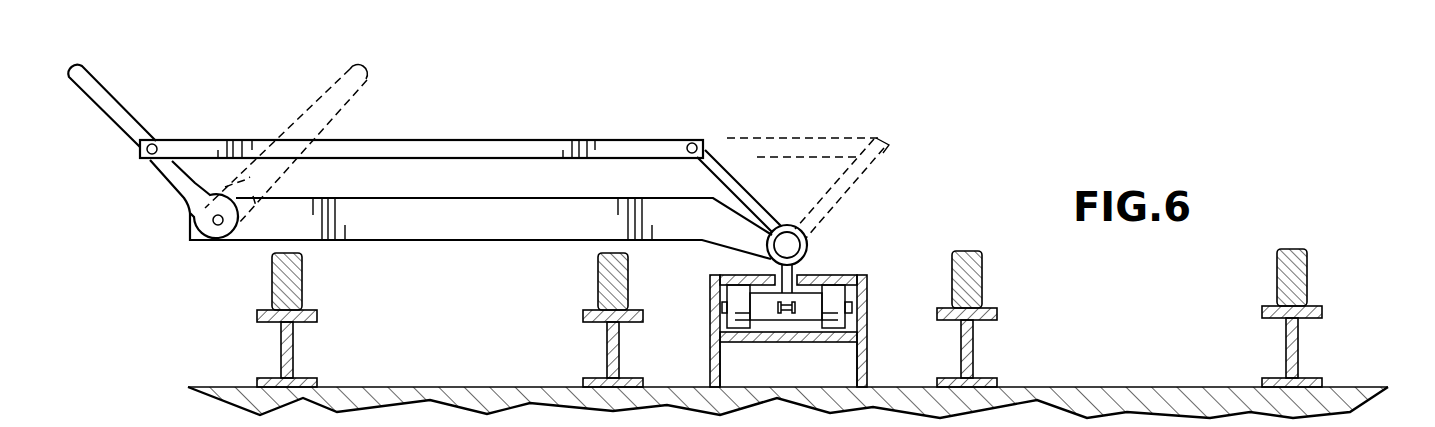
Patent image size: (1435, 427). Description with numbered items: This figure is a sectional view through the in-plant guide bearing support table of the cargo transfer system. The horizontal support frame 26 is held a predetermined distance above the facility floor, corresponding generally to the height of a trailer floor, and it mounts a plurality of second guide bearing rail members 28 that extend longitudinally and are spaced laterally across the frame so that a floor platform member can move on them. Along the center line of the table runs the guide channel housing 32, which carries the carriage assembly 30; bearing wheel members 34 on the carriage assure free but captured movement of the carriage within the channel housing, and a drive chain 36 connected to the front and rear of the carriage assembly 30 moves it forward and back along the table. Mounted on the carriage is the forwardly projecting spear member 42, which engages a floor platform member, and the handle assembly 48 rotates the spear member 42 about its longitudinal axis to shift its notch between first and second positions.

The horizontal support frame 26 is at (445, 387).
The second guide bearing rail members 28 is at (268, 306).
The carriage assembly 30 is at (808, 318).
The guide channel housing 32 is at (867, 296).
The bearing wheel members 34 is at (727, 294).
The drive chain 36 is at (786, 315).
The spear member 42 is at (789, 234).
The handle assembly 48 is at (498, 126).